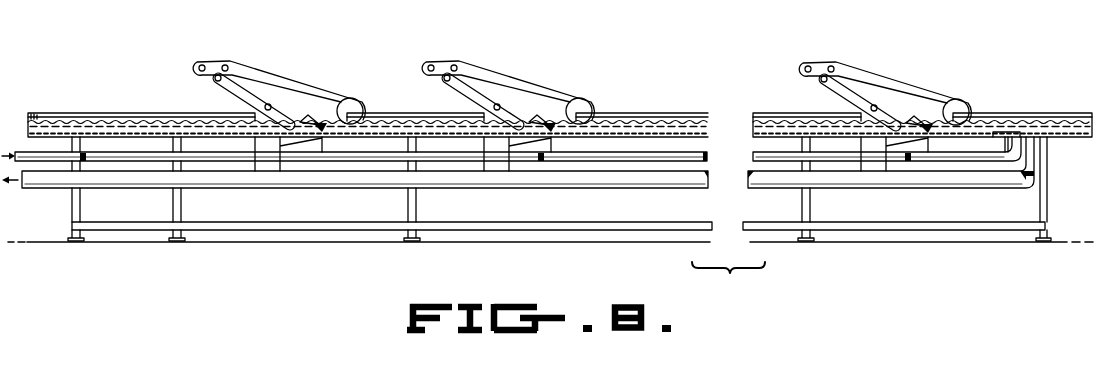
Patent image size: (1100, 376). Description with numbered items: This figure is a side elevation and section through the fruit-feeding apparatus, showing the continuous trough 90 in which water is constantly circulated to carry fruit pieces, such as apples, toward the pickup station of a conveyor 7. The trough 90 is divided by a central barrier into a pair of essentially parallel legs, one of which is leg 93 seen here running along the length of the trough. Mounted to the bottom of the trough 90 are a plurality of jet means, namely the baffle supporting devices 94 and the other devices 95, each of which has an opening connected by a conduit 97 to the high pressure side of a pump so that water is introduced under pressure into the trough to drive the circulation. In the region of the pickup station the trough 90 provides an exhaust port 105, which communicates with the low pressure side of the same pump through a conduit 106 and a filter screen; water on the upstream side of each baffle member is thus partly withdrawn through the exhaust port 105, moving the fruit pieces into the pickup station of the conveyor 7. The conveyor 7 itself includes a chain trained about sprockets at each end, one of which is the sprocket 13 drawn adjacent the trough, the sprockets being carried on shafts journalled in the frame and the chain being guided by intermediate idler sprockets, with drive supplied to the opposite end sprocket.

The conveyor 7 is at (582, 80).
The sprocket 13 is at (351, 104).
The trough 90 is at (1042, 109).
The leg 93 is at (643, 120).
The baffle supporting device 94 is at (533, 117).
The device 95 is at (1003, 132).
The conduit 97 is at (707, 158).
The exhaust port 105 is at (263, 128).
The conduit 106 is at (277, 185).